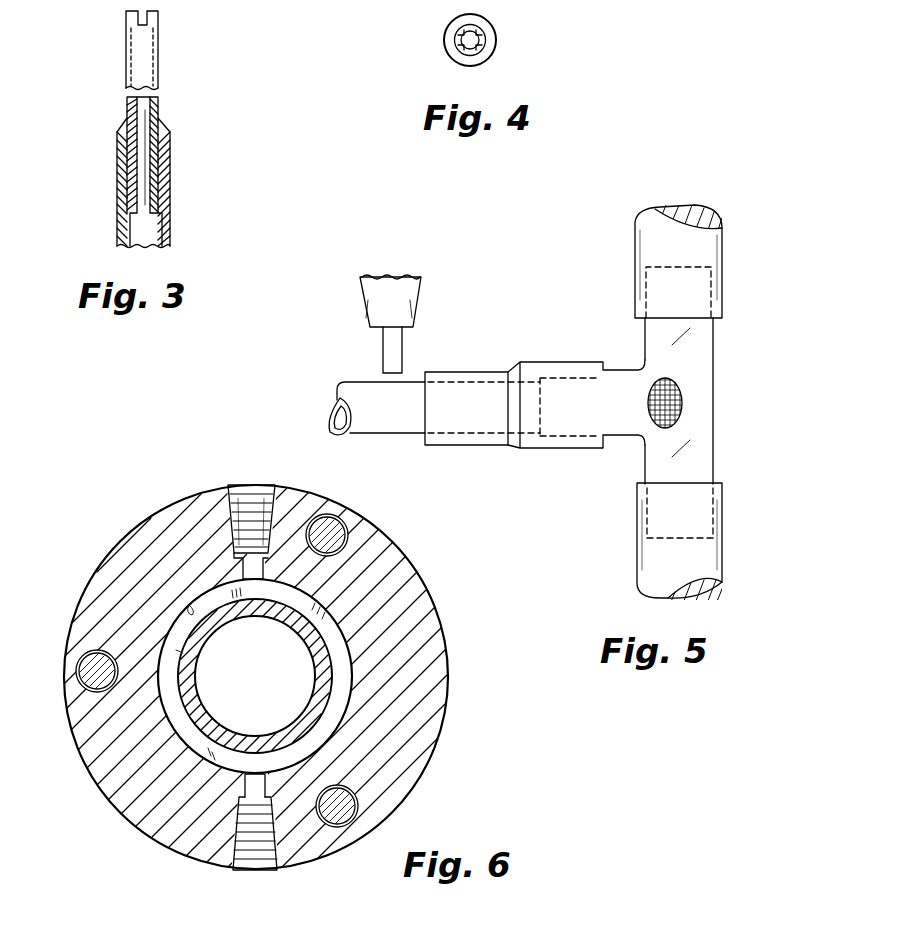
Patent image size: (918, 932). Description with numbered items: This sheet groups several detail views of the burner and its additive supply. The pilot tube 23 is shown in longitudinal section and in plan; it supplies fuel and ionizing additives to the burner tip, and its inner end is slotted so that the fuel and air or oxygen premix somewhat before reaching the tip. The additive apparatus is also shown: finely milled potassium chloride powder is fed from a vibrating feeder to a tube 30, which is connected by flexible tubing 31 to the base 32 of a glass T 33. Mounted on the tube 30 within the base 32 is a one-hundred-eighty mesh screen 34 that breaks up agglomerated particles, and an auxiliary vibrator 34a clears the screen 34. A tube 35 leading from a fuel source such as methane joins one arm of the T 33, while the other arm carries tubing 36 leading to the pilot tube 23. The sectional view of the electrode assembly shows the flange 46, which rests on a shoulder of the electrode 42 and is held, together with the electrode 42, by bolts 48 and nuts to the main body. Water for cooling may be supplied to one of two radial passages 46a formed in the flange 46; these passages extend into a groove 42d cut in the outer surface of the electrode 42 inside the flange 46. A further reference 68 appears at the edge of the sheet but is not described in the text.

In FIG. 3, the pilot tube 23 is at (159, 38).
In FIG. 4, the pilot tube 23 is at (485, 27).
In FIG. 5, the tube 30 is at (403, 436).
In FIG. 5, the flexible tubing 31 is at (483, 442).
In FIG. 5, the base 32 is at (618, 367).
In FIG. 5, the glass T 33 is at (714, 350).
In FIG. 5, the screen 34 is at (683, 417).
In FIG. 5, the auxiliary vibrator 34a is at (367, 311).
In FIG. 5, the tube 35 is at (637, 216).
In FIG. 5, the tubing 36 is at (724, 513).
In FIG. 6, the electrode 42 is at (226, 731).
In FIG. 6, the groove 42d is at (189, 609).
In FIG. 6, the flange 46 is at (103, 797).
In FIG. 6, the radial passages 46a is at (256, 486).
In FIG. 6, the bolts 48 is at (340, 528).
In FIG. 6, the member 68 is at (222, 927).